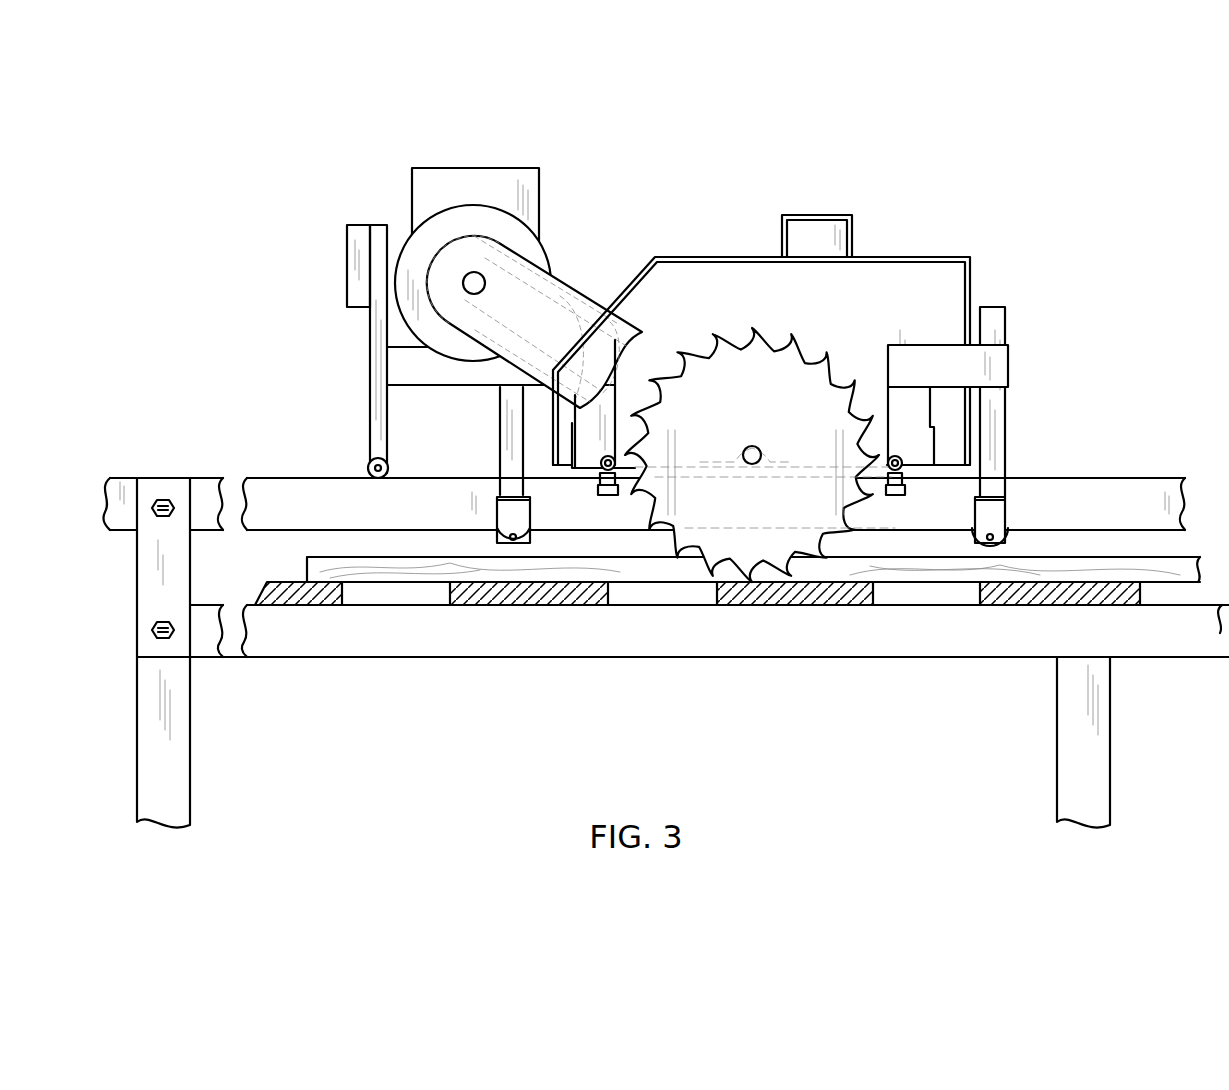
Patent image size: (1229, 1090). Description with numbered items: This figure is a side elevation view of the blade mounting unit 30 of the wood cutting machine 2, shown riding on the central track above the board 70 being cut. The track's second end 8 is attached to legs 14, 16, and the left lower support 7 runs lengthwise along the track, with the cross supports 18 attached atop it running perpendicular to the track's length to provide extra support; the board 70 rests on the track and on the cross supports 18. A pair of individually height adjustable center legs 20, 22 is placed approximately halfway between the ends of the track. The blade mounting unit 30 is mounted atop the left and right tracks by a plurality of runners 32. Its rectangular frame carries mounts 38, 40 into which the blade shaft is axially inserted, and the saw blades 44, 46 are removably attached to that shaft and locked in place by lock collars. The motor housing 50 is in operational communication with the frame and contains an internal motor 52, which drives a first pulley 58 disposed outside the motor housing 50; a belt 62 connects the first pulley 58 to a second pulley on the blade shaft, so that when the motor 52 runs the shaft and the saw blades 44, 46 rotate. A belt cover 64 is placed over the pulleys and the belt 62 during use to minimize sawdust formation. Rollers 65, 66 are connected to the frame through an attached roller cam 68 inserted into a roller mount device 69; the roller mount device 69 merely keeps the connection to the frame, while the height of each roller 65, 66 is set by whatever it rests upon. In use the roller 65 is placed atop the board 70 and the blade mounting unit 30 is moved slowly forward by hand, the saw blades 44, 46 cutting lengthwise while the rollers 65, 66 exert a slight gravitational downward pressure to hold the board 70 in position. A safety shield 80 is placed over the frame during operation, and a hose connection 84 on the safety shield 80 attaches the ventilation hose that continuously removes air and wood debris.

The wood cutting machine 2 is at (216, 414).
The left lower support 7 is at (1013, 200).
The second end 8 is at (140, 478).
The leg 14 is at (231, 653).
The leg 16 is at (190, 765).
The cross supports 18 is at (562, 606).
The center leg 20 is at (1143, 742).
The center leg 22 is at (1110, 765).
The blade mounting unit 30 is at (671, 202).
The runners 32 is at (368, 467).
The mount 38 is at (903, 336).
The mount 40 is at (762, 440).
The saw blade 44 is at (805, 370).
The saw blade 46 is at (807, 343).
The motor housing 50 is at (477, 168).
The motor 52 is at (505, 249).
The first pulley 58 is at (447, 250).
The belt 62 is at (565, 288).
The belt cover 64 is at (460, 332).
The roller 65 is at (985, 553).
The roller 66 is at (503, 546).
The roller cam 68 is at (1005, 320).
The roller mount device 69 is at (1008, 365).
The board 70 is at (1097, 568).
The safety shield 80 is at (718, 256).
The hose connection 84 is at (853, 216).